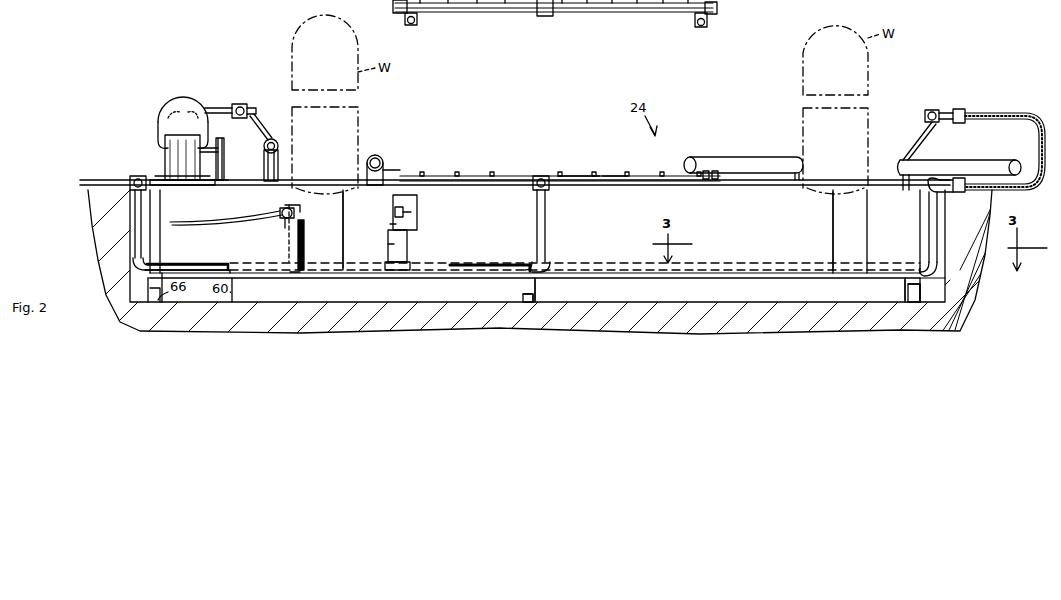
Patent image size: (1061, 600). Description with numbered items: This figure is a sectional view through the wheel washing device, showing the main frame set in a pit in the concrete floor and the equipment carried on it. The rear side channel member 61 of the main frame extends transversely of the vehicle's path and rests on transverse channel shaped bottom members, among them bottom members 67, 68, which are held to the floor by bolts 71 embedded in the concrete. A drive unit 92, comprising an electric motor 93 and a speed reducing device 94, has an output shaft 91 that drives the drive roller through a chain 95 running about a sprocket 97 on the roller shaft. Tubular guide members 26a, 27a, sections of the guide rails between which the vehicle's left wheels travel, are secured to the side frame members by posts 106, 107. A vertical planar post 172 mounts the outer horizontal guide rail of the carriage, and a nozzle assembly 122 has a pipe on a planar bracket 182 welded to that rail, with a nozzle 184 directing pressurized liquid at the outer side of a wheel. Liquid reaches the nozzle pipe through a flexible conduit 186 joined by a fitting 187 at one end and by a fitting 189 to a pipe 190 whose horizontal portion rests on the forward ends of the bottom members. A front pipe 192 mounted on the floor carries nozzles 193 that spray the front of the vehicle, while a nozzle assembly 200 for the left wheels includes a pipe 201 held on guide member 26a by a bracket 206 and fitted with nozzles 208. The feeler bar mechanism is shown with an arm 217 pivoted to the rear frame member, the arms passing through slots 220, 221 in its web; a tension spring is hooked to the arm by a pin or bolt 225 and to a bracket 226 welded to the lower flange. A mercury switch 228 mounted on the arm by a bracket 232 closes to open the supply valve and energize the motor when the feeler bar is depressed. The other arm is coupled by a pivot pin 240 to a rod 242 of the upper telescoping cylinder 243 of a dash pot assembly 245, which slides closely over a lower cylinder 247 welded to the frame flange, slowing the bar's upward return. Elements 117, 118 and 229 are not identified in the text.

The tubular guide member 26a is at (275, 141).
The tubular guide member 27a is at (384, 146).
The rear side channel member 61 is at (745, 252).
The bottom member 67 is at (540, 295).
The bottom member 68 is at (905, 291).
The bolt 71 is at (527, 296).
The output shaft 91 is at (213, 150).
The drive unit 92 is at (149, 121).
The electric motor 93 is at (180, 97).
The speed reducing device 94 is at (165, 150).
The chain 95 is at (226, 180).
The sprocket 97 is at (224, 150).
The post 106 is at (280, 158).
The post 107 is at (390, 168).
The partition 117 is at (343, 200).
The partition wall 118 is at (833, 228).
The nozzle assembly 122 is at (944, 109).
The vertical planar post 172 is at (850, 192).
The planar bracket 182 is at (920, 150).
The nozzle 184 is at (927, 116).
The flexible conduit 186 is at (1028, 118).
The fitting 187 is at (964, 110).
The fitting 189 is at (932, 192).
The pipe 190 is at (511, 169).
The pipe 192 is at (584, 176).
The nozzles 193 is at (625, 176).
The nozzle assembly 200 is at (225, 106).
The pipe 201 is at (247, 104).
The bracket 206 is at (262, 120).
The nozzles 208 is at (262, 106).
The arm 217 is at (292, 205).
The slot 220 is at (418, 205).
The slot 221 is at (288, 244).
The pin or bolt 225 is at (297, 214).
The bracket 226 is at (293, 272).
The mercury switch 228 is at (280, 205).
The rod 229 is at (303, 252).
The bracket 232 is at (288, 224).
The pivot pin 240 is at (412, 214).
The rod 242 is at (393, 224).
The upper telescoping cylinder 243 is at (414, 240).
The dash pot assembly 245 is at (389, 244).
The cylinder 247 is at (388, 262).